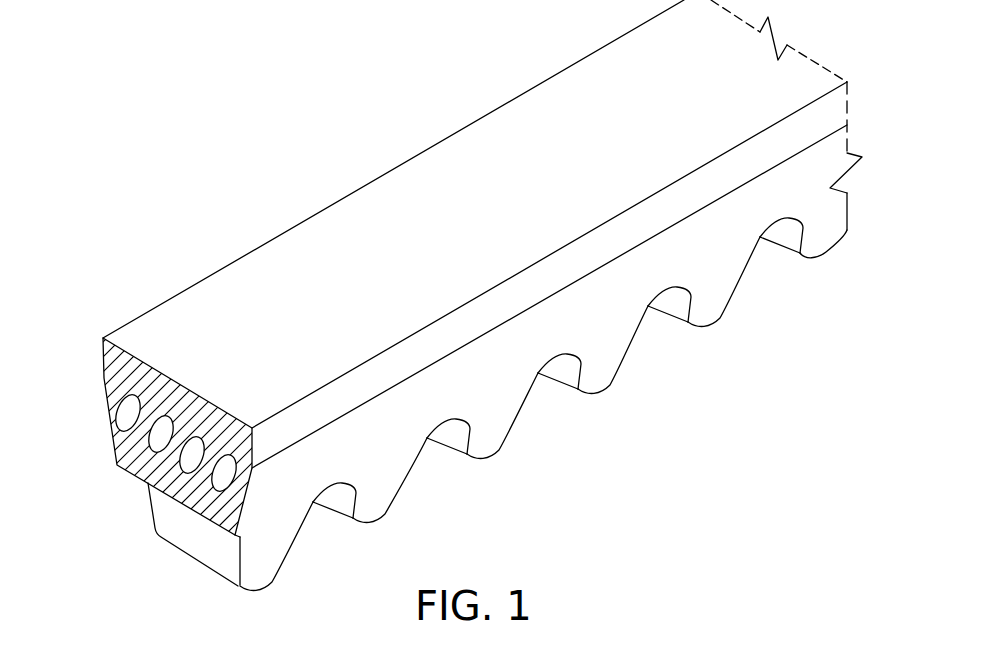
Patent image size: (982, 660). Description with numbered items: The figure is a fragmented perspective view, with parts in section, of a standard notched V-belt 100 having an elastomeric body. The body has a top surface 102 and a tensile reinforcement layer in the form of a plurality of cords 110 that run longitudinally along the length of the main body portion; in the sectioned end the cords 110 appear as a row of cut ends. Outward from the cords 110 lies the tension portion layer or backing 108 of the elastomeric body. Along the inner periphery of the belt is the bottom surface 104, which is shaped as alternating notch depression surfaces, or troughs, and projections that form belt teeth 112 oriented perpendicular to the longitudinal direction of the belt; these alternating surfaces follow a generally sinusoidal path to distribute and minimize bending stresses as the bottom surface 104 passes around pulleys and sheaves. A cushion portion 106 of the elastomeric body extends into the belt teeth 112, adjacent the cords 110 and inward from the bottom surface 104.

The notched V-belt 100 is at (333, 167).
The top surface 102 is at (510, 173).
The bottom surface 104 is at (688, 323).
The cushion portion 106 is at (472, 420).
The tension portion layer 108 is at (103, 358).
The cords 110 is at (117, 433).
The belt teeth 112 is at (715, 302).